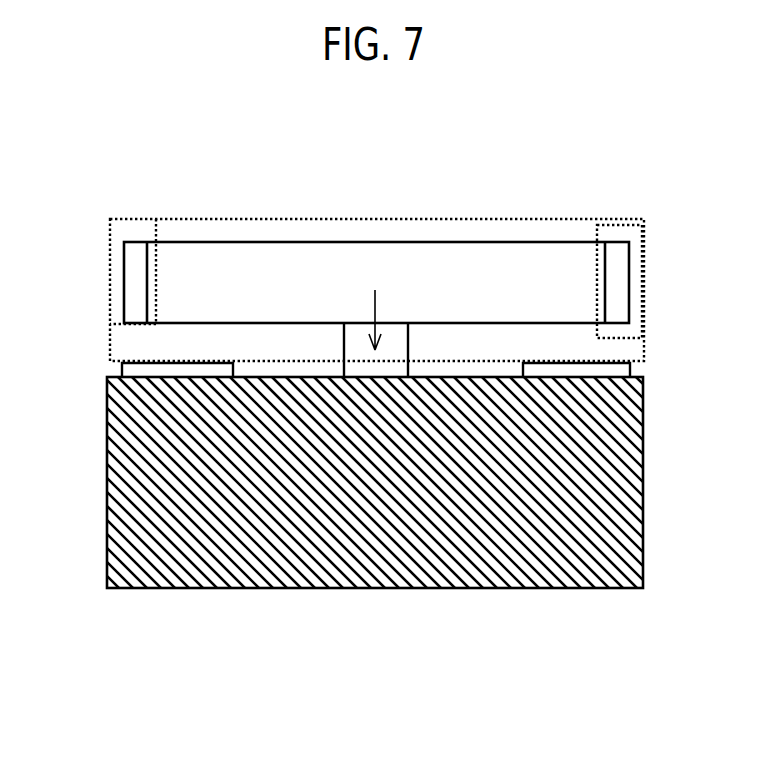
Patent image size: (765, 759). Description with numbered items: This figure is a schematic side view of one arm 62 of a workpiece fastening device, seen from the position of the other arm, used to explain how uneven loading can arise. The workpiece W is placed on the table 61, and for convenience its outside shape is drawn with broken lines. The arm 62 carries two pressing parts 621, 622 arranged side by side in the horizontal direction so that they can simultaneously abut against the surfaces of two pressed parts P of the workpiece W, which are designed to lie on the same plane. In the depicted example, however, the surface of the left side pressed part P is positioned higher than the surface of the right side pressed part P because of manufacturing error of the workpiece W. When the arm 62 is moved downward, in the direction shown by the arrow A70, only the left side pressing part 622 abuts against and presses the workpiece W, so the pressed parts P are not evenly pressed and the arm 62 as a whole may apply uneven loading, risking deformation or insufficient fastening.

The table 61 is at (518, 573).
The arm 62 is at (233, 241).
The pressing part 621 is at (618, 263).
The pressing part 622 is at (137, 263).
The arrow A70 is at (375, 303).
The workpiece W is at (646, 243).
The pressed part P is at (118, 322).